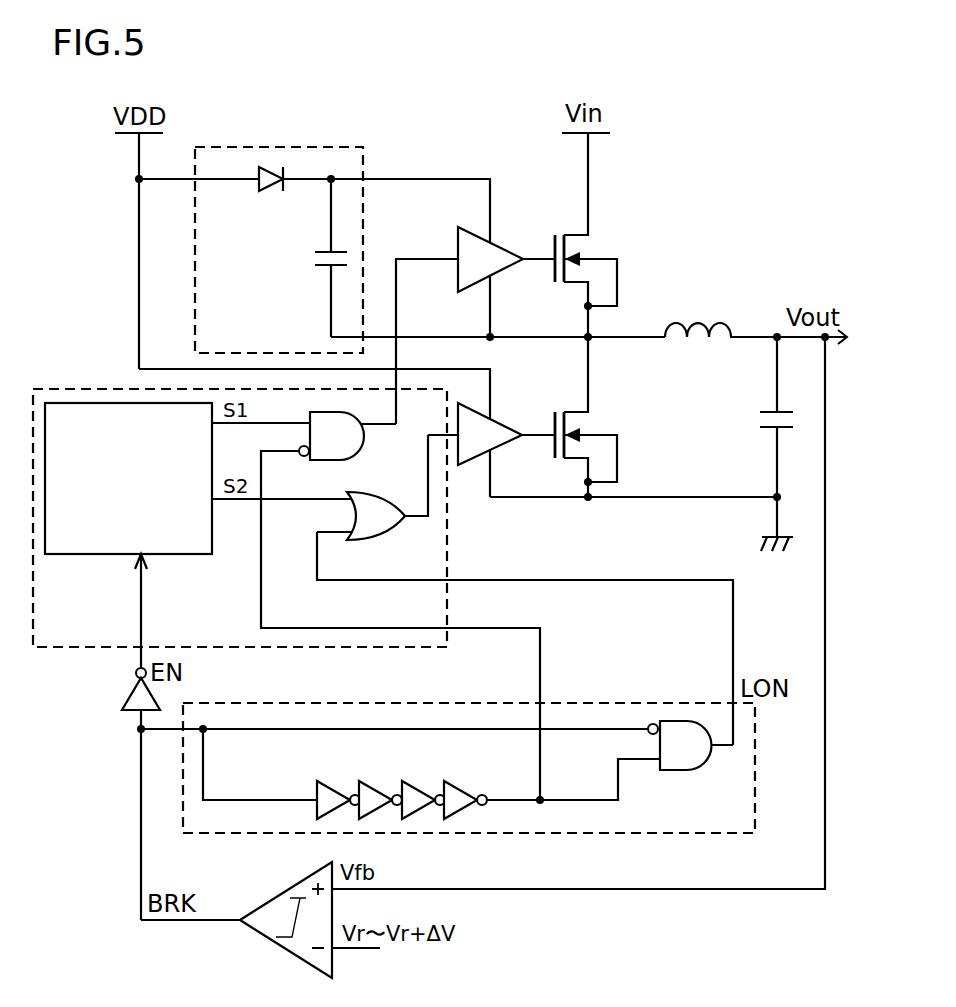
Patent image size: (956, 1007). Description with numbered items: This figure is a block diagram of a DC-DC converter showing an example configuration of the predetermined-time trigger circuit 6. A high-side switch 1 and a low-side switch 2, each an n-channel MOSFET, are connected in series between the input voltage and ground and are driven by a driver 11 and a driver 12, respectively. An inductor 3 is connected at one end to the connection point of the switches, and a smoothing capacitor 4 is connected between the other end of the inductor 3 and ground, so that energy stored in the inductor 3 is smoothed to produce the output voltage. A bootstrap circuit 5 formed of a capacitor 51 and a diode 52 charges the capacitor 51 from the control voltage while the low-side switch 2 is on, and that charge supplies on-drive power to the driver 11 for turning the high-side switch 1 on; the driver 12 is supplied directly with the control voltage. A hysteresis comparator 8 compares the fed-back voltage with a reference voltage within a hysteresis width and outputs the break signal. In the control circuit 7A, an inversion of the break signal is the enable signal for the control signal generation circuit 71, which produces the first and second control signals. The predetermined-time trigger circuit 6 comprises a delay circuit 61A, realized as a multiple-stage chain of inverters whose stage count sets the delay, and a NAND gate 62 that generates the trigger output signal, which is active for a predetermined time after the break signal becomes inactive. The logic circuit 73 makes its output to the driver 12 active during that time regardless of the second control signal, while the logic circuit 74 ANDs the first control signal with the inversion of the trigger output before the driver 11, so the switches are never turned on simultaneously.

The high-side switch 1 is at (590, 243).
The low-side switch 2 is at (590, 422).
The inductor 3 is at (690, 320).
The smoothing capacitor 4 is at (793, 430).
The bootstrap circuit 5 is at (363, 153).
The capacitor 51 is at (318, 268).
The diode 52 is at (273, 192).
The predetermined-time trigger circuit 6 is at (757, 794).
The delay circuit 61A is at (298, 770).
The NAND gate 62 is at (675, 772).
The control circuit 7A is at (447, 549).
The control signal generation circuit 71 is at (104, 555).
The logic circuit 73 is at (372, 540).
The logic circuit 74 is at (355, 450).
The hysteresis comparator 8 is at (289, 887).
The driver 11 is at (496, 245).
The driver 12 is at (496, 420).